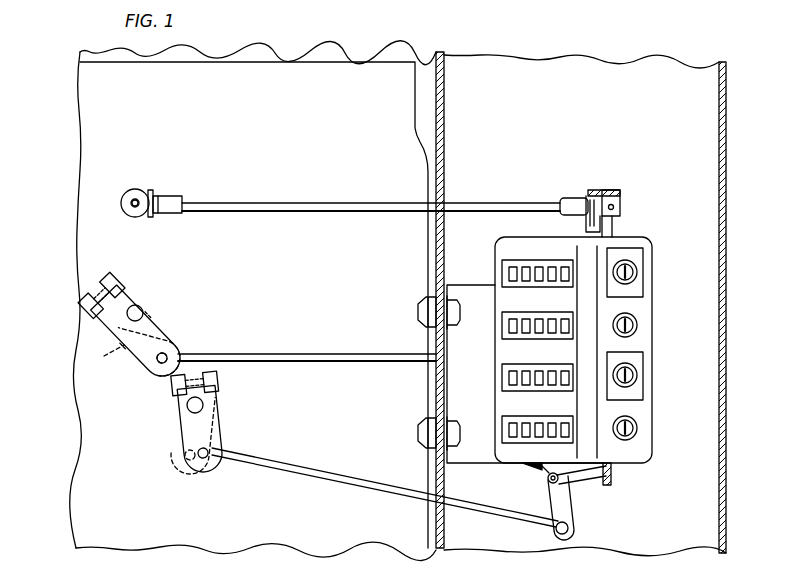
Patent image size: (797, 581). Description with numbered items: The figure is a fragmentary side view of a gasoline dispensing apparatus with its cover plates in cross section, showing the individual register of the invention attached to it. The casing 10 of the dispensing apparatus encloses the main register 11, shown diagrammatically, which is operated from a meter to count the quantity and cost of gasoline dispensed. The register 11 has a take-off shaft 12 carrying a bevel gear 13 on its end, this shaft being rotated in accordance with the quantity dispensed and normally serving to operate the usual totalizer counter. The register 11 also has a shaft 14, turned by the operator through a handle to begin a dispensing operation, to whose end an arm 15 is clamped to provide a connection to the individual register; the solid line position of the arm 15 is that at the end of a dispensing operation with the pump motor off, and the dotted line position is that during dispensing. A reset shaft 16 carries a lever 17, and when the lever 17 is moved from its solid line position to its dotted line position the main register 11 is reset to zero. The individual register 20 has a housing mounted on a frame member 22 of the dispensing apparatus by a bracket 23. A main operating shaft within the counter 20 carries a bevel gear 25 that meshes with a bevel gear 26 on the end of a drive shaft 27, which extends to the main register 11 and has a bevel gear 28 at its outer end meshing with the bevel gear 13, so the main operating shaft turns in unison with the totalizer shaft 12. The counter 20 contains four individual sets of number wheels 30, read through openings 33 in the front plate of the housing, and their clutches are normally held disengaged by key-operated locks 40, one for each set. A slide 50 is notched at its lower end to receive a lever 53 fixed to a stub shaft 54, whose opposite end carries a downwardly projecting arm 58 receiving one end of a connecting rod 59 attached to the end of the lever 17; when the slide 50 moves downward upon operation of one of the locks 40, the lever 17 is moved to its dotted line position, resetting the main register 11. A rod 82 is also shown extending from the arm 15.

The casing 10 is at (726, 168).
The register 11 is at (386, 70).
The take-off shaft 12 is at (130, 197).
The bevel gear 13 is at (127, 209).
The shaft 14 is at (134, 306).
The arm 15 is at (158, 330).
The reset shaft 16 is at (188, 405).
The lever 17 is at (210, 420).
The individual register 20 is at (662, 262).
The frame member 22 is at (448, 68).
The bracket 23 is at (473, 456).
The bevel gear 25 is at (620, 198).
The bevel gear 26 is at (592, 200).
The drive shaft 27 is at (254, 201).
The bevel gear 28 is at (152, 192).
The individual sets of number wheels 30 is at (513, 282).
The openings 33 is at (515, 270).
The key-operated locks 40 is at (629, 262).
The slide 50 is at (612, 481).
The lever 53 is at (586, 480).
The stub shaft 54 is at (548, 479).
The arm 58 is at (576, 523).
The connecting rod 59 is at (327, 480).
The rod 82 is at (284, 358).